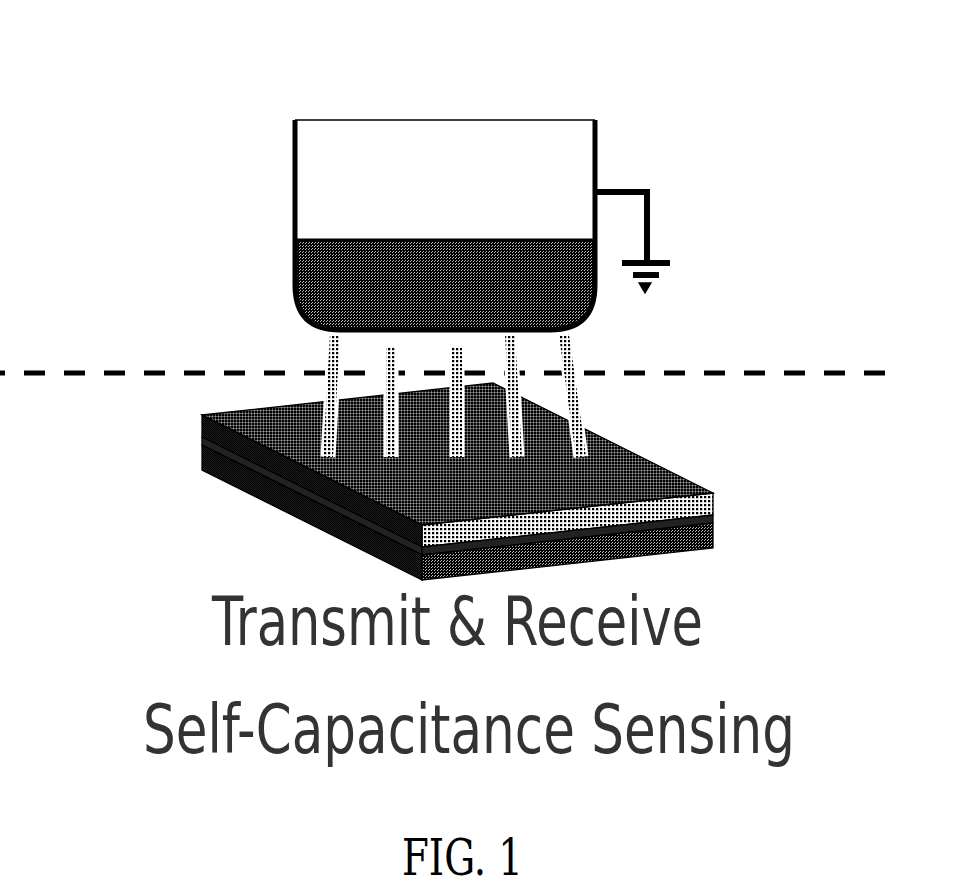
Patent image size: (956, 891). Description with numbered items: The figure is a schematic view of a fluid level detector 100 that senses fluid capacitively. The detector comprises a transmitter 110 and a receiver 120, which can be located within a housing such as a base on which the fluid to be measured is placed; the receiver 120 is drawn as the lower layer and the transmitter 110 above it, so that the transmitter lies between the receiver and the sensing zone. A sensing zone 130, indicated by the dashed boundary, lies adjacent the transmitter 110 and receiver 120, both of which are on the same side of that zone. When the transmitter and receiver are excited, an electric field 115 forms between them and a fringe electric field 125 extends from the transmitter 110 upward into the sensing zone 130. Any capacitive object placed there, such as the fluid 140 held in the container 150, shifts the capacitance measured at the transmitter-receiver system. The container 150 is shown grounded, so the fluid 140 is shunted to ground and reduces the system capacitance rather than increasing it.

The fluid level detector 100 is at (651, 148).
The transmitter 110 is at (648, 460).
The electric field 115 is at (407, 537).
The receiver 120 is at (713, 543).
The fringe electric field 125 is at (322, 432).
The sensing zone 130 is at (269, 378).
The fluid 140 is at (358, 277).
The container 150 is at (293, 153).